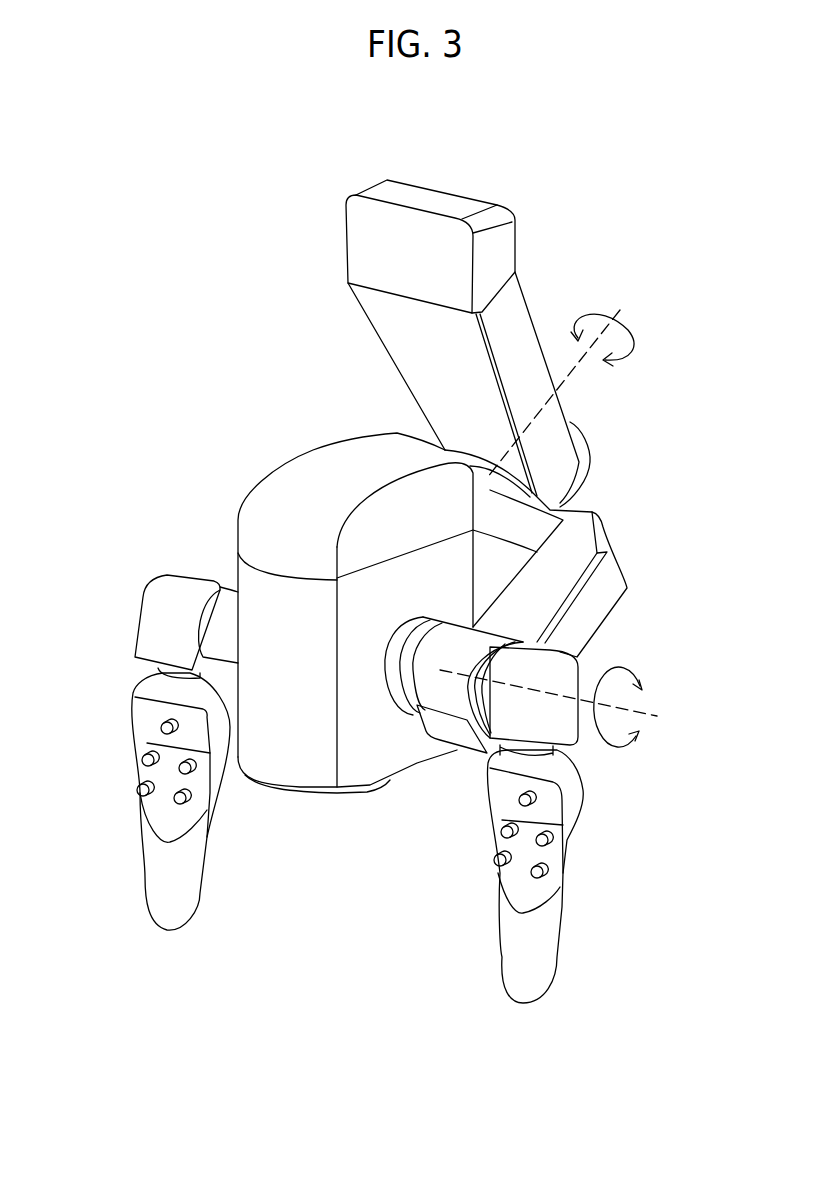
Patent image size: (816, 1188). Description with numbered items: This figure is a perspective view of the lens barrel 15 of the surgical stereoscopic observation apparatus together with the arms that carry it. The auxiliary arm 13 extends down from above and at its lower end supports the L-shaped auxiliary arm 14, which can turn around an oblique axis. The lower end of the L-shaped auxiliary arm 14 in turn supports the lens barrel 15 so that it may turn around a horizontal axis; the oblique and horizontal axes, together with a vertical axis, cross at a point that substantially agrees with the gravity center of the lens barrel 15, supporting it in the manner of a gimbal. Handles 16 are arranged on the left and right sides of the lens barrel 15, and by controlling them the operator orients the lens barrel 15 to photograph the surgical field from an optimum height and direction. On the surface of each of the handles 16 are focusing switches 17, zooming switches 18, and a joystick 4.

The joystick 4 is at (147, 732).
The auxiliary arm 13 is at (560, 405).
The L-shaped auxiliary arm 14 is at (625, 577).
The lens barrel 15 is at (293, 457).
The handles 16 is at (140, 867).
The focusing switches 17 is at (193, 806).
The zooming switches 18 is at (140, 783).